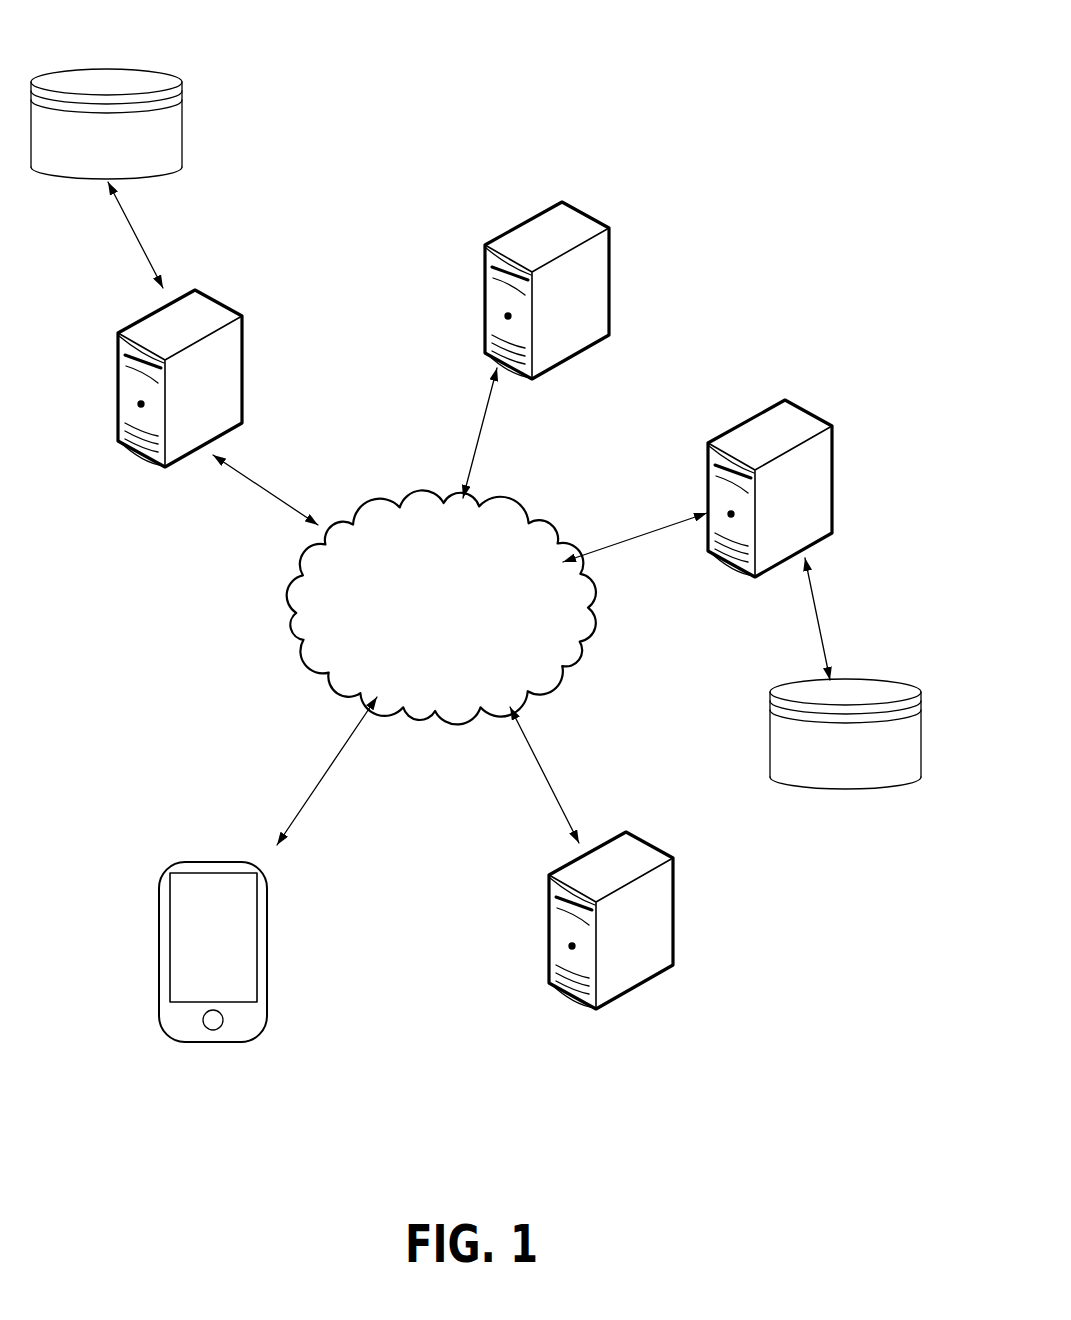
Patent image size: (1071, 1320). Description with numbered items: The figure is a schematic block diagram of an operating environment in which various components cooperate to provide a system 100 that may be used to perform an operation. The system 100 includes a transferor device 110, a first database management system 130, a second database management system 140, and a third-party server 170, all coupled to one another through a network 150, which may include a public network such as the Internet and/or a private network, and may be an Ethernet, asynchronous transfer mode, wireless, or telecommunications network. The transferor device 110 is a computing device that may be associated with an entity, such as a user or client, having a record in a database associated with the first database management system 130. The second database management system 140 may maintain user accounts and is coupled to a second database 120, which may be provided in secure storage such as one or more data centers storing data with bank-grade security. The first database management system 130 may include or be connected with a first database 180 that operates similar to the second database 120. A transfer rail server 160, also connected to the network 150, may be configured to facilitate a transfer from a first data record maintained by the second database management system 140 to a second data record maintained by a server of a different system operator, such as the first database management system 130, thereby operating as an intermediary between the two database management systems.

The system 100 is at (695, 98).
The transferor device 110 is at (282, 925).
The second database 120 is at (163, 77).
The first database management system 130 is at (830, 425).
The second database management system 140 is at (195, 255).
The network 150 is at (421, 620).
The transfer rail server 160 is at (607, 225).
The third-party server 170 is at (692, 897).
The first database 180 is at (905, 683).